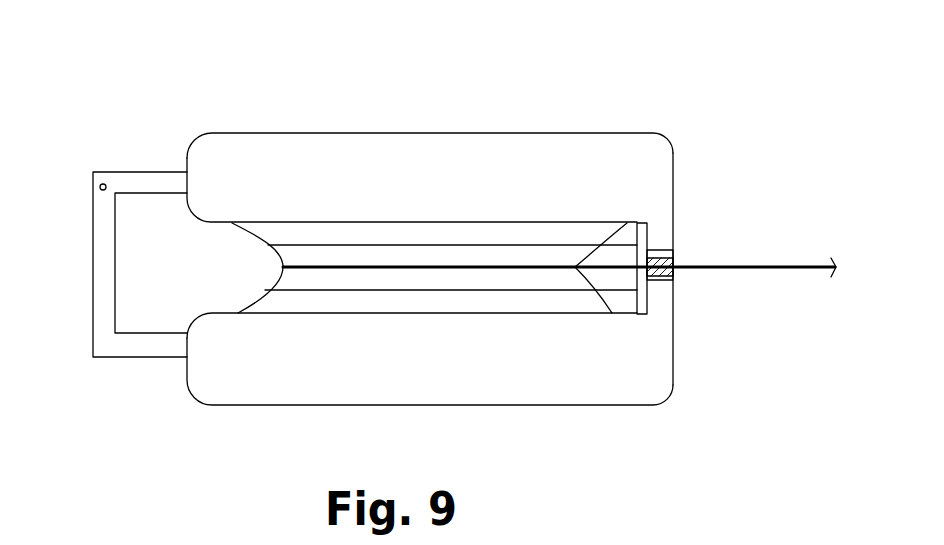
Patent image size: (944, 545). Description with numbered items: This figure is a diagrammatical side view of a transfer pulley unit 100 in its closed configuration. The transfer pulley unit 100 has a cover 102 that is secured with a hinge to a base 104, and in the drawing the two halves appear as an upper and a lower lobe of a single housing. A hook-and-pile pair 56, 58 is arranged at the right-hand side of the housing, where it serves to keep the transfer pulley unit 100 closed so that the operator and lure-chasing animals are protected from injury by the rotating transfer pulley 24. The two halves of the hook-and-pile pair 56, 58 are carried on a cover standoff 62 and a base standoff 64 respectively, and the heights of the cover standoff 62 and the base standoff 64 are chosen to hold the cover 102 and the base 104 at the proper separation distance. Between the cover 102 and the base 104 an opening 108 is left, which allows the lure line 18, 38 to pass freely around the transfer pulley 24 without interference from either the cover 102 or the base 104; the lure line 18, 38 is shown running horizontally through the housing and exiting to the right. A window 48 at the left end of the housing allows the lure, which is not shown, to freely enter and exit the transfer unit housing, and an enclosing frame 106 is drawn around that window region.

The transfer pulley unit 100 is at (459, 53).
The cover 102 is at (593, 132).
The base 104 is at (515, 403).
The mounting frame 106 is at (93, 248).
The opening 108 is at (222, 267).
The window 48 is at (148, 228).
The transfer pulley 24 is at (272, 302).
The cover standoff 62 is at (644, 222).
The hook-and-pile pair (hook portion) 56 is at (673, 263).
The hook-and-pile pair (pile portion) 58 is at (675, 272).
The base standoff 64 is at (610, 313).
The lure line 18 is at (560, 323).
The lure line 38 is at (760, 268).